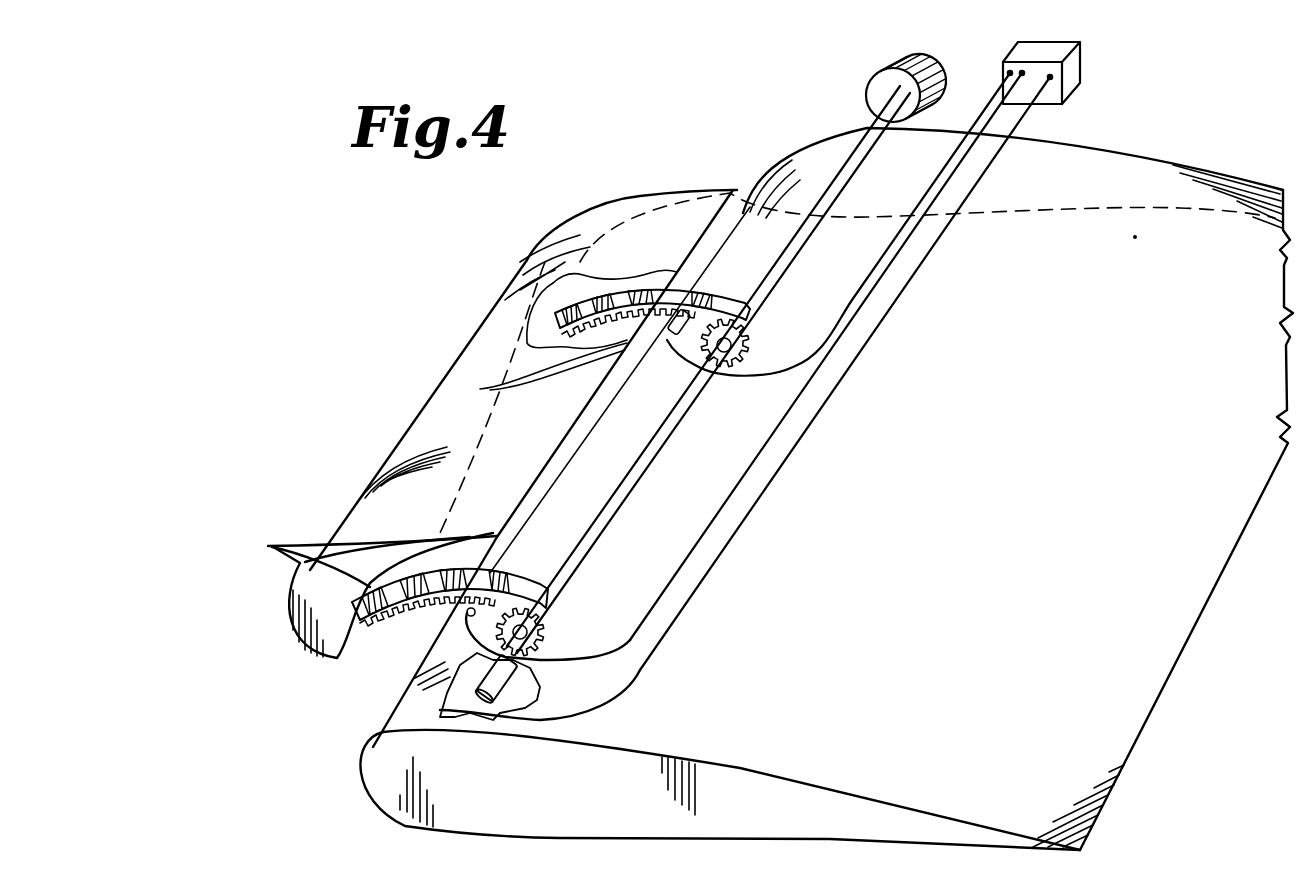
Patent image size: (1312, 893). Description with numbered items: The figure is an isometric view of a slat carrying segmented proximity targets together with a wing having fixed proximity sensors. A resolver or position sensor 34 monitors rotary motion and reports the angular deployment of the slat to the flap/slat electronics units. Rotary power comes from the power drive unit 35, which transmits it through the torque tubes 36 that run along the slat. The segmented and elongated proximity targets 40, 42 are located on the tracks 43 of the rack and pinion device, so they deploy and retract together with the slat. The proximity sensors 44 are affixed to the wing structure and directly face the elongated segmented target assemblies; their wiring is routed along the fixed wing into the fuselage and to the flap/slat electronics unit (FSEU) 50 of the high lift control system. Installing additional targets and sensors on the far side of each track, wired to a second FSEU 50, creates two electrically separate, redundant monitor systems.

The position sensor 34 is at (440, 710).
The power drive unit 35 is at (882, 80).
The torque tubes 36 is at (852, 182).
The proximity targets 40 is at (400, 542).
The proximity targets 42 is at (633, 340).
The tracks 43 is at (713, 295).
The proximity sensors 44 is at (686, 330).
The flap/slat electronics unit (FSEU) 50 is at (1055, 104).